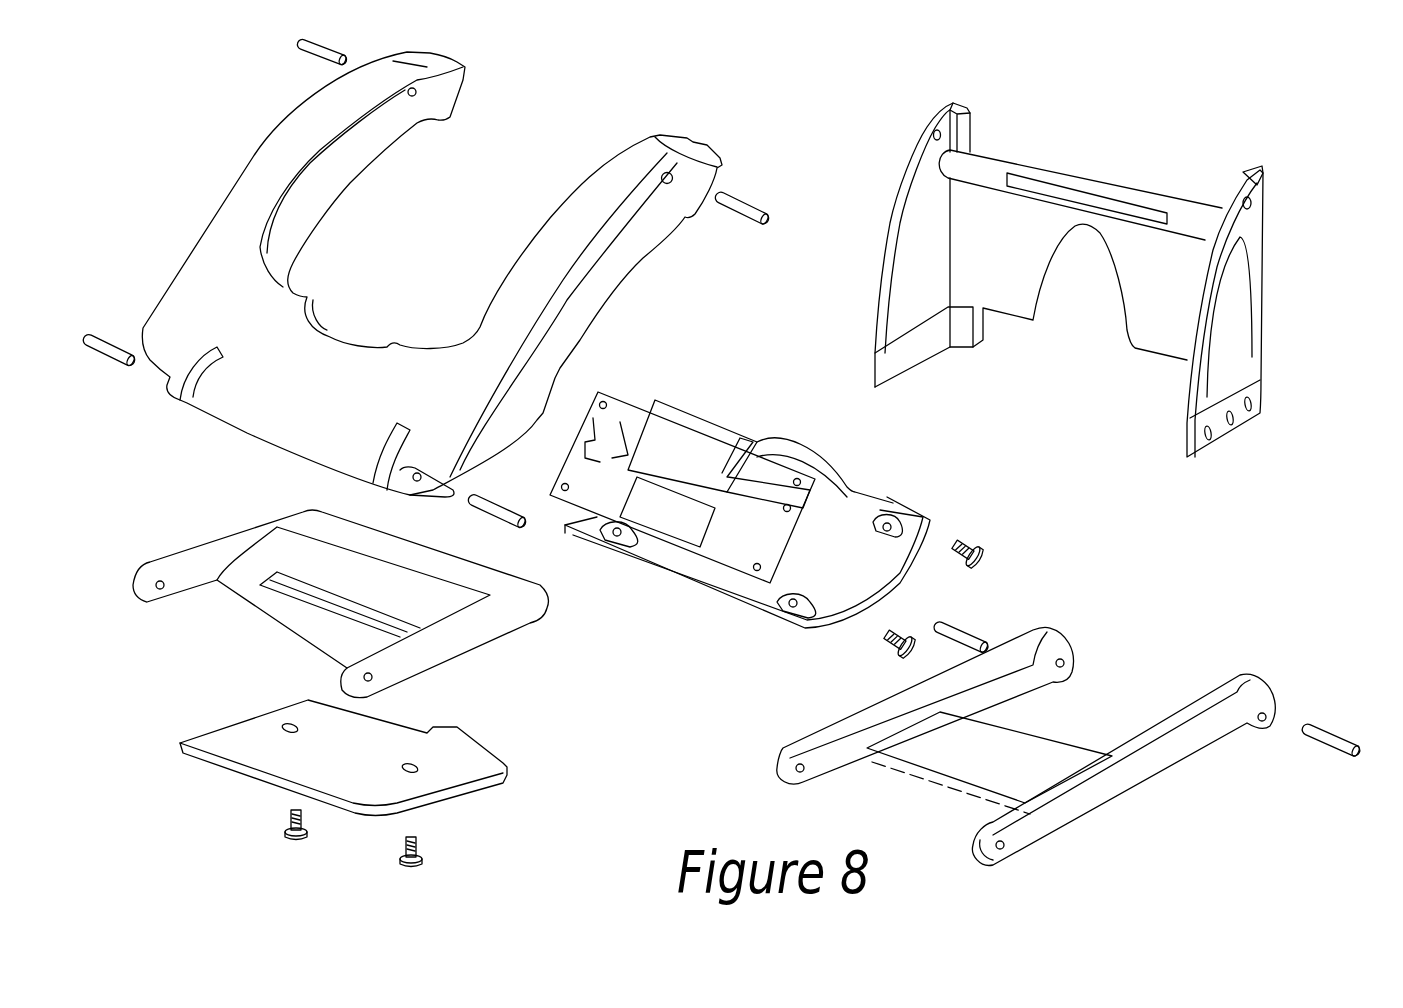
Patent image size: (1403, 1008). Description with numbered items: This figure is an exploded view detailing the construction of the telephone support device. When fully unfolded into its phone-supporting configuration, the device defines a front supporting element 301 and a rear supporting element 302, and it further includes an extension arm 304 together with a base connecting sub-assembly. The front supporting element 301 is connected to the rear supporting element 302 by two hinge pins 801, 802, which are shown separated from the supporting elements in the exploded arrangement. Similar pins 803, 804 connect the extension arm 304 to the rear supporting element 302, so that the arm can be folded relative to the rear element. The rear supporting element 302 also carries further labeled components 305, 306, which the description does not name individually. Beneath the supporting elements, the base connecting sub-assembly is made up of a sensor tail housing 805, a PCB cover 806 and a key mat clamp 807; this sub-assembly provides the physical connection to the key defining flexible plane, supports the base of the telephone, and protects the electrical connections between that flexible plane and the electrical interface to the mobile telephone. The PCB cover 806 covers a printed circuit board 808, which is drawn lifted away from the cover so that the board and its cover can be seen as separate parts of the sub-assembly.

The front supporting element 301 is at (277, 168).
The rear supporting element 302 is at (1123, 173).
The extension arm 304 is at (1061, 636).
The side plate 305 is at (1240, 307).
The cross beam 306 is at (987, 173).
The hinge pin 801 is at (327, 58).
The hinge pin 802 is at (742, 197).
The pin 803 is at (959, 636).
The pin 804 is at (1328, 748).
The sensor tail housing 805 is at (470, 630).
The PCB cover 806 is at (897, 503).
The key mat clamp 807 is at (417, 755).
The printed circuit board 808 is at (693, 437).